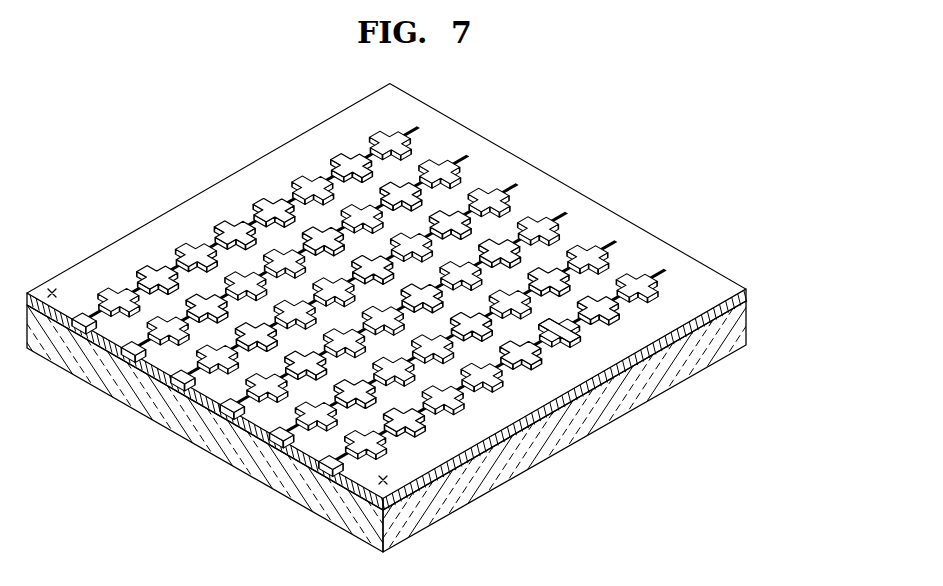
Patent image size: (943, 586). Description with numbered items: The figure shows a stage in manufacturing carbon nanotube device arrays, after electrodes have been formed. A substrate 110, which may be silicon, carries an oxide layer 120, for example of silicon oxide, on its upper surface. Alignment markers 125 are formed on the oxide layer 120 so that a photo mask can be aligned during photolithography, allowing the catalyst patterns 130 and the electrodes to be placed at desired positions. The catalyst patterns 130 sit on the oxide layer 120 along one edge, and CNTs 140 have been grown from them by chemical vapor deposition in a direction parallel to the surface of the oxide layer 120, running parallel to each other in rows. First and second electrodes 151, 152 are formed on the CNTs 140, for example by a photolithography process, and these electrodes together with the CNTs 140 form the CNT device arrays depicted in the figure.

The substrate 110 is at (748, 333).
The oxide layer 120 is at (750, 295).
The alignment markers 125 is at (52, 280).
The catalyst patterns 130 is at (277, 431).
The CNTs 140 is at (613, 242).
The first electrode 151 is at (539, 349).
The second electrode 152 is at (586, 345).